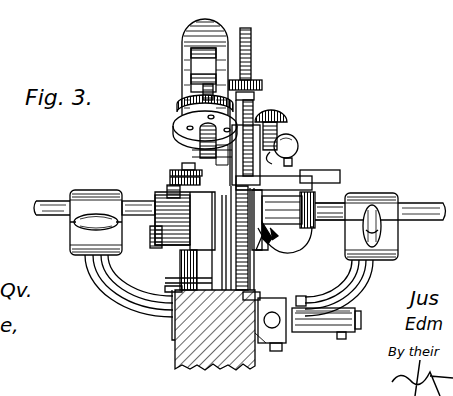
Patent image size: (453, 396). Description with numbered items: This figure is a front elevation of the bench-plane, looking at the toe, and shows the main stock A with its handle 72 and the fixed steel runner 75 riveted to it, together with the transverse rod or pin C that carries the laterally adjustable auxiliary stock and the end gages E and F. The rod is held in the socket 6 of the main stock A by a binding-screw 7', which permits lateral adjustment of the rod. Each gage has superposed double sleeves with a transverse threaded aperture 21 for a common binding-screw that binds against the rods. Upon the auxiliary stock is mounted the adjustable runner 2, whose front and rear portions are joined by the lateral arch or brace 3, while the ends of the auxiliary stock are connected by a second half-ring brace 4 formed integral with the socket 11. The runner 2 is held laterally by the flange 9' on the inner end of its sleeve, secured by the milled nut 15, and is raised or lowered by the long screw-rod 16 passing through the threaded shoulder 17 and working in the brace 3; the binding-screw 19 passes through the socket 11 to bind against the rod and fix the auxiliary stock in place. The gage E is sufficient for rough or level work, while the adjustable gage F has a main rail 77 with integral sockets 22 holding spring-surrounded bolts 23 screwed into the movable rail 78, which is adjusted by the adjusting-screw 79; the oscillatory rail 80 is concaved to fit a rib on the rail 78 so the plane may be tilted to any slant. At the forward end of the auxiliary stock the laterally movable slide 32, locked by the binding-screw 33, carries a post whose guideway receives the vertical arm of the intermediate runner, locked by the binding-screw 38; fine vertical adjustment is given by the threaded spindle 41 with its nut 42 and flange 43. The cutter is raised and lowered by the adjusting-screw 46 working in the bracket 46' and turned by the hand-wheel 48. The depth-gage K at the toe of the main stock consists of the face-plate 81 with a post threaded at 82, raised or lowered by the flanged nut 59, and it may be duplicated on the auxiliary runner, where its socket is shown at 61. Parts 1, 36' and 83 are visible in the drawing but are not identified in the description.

The bar 1 is at (285, 176).
The adjustable runner 2 is at (249, 285).
The lateral arch 3 is at (296, 246).
The half-ring brace 4 is at (330, 204).
The socket 6 is at (112, 220).
The binding-screw 7' is at (173, 181).
The flange 9' is at (219, 242).
The socket 11 is at (277, 220).
The milled nut 15 is at (310, 228).
The screw-rod 16 is at (275, 120).
The threaded shoulder 17 is at (290, 118).
The binding-screw 19 is at (292, 160).
The threaded aperture 21 is at (376, 214).
The socket 22 is at (326, 332).
The bolt 23 is at (360, 311).
The slide 32 is at (316, 172).
The binding-screw 33 is at (292, 138).
The rod 36' is at (224, 143).
The binding-screw 38 is at (195, 150).
The threaded spindle 41 is at (251, 47).
The nut 42 is at (256, 82).
The flange 43 is at (256, 102).
The adjusting-screw 46 is at (183, 90).
The bracket 46' is at (190, 136).
The hand-wheel 48 is at (185, 115).
The flanged nut 59 is at (176, 171).
The socket 61 is at (270, 246).
The handle 72 is at (200, 40).
The steel runner 75 is at (165, 278).
The fixed rail 77 is at (300, 316).
The movable rail 78 is at (276, 351).
The adjusting-screw 79 is at (341, 339).
The oscillatory rail 80 is at (258, 300).
The face-plate 81 is at (170, 290).
The screw-threaded portion 82 is at (182, 165).
The fitting 83 is at (300, 296).
The main stock A is at (185, 241).
The rod C is at (422, 206).
The end gage E is at (116, 292).
The adjustable gage F is at (362, 278).
The depth-gage K is at (180, 266).